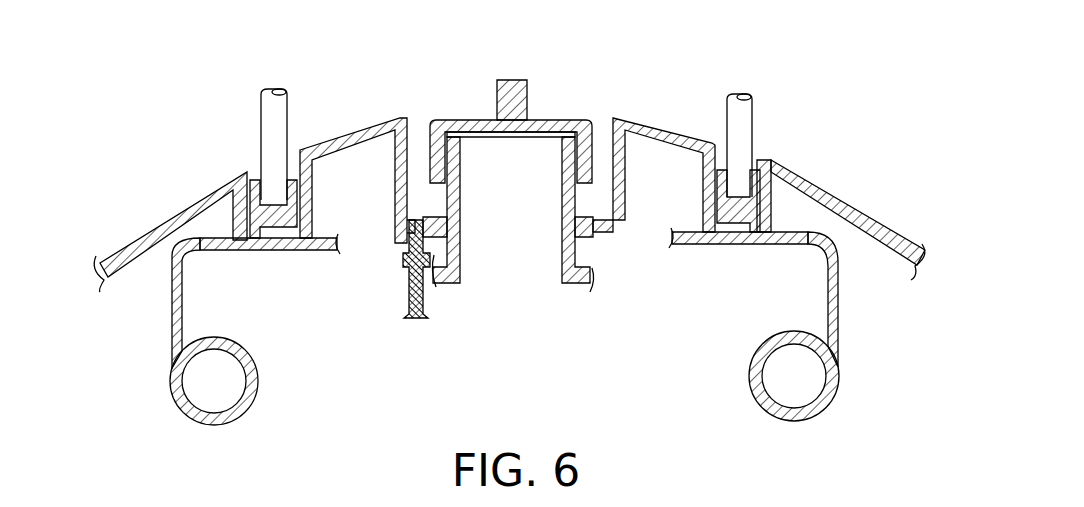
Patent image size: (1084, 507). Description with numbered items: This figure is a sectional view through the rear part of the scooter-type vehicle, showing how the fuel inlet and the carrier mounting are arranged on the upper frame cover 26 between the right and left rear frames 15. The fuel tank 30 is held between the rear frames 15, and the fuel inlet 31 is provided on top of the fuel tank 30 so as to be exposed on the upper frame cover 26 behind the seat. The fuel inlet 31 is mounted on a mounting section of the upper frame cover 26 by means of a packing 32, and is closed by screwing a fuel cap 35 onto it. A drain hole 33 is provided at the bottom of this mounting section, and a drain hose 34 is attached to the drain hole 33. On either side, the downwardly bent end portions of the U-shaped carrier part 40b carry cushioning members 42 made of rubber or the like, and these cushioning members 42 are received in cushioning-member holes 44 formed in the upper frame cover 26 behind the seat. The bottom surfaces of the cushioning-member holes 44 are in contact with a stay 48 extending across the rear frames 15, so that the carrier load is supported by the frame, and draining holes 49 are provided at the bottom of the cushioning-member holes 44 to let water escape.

The rear frame 15 is at (258, 384).
The upper frame cover 26 is at (833, 200).
The fuel tank 30 is at (567, 287).
The fuel inlet 31 is at (484, 150).
The packing 32 is at (446, 254).
The drain hole 33 is at (411, 237).
The drain hose 34 is at (410, 292).
The fuel cap 35 is at (508, 96).
The carrier part 40b is at (268, 110).
The cushioning member 42 is at (292, 178).
The cushioning-member hole 44 is at (253, 167).
The stay 48 is at (284, 251).
The draining hole 49 is at (247, 235).